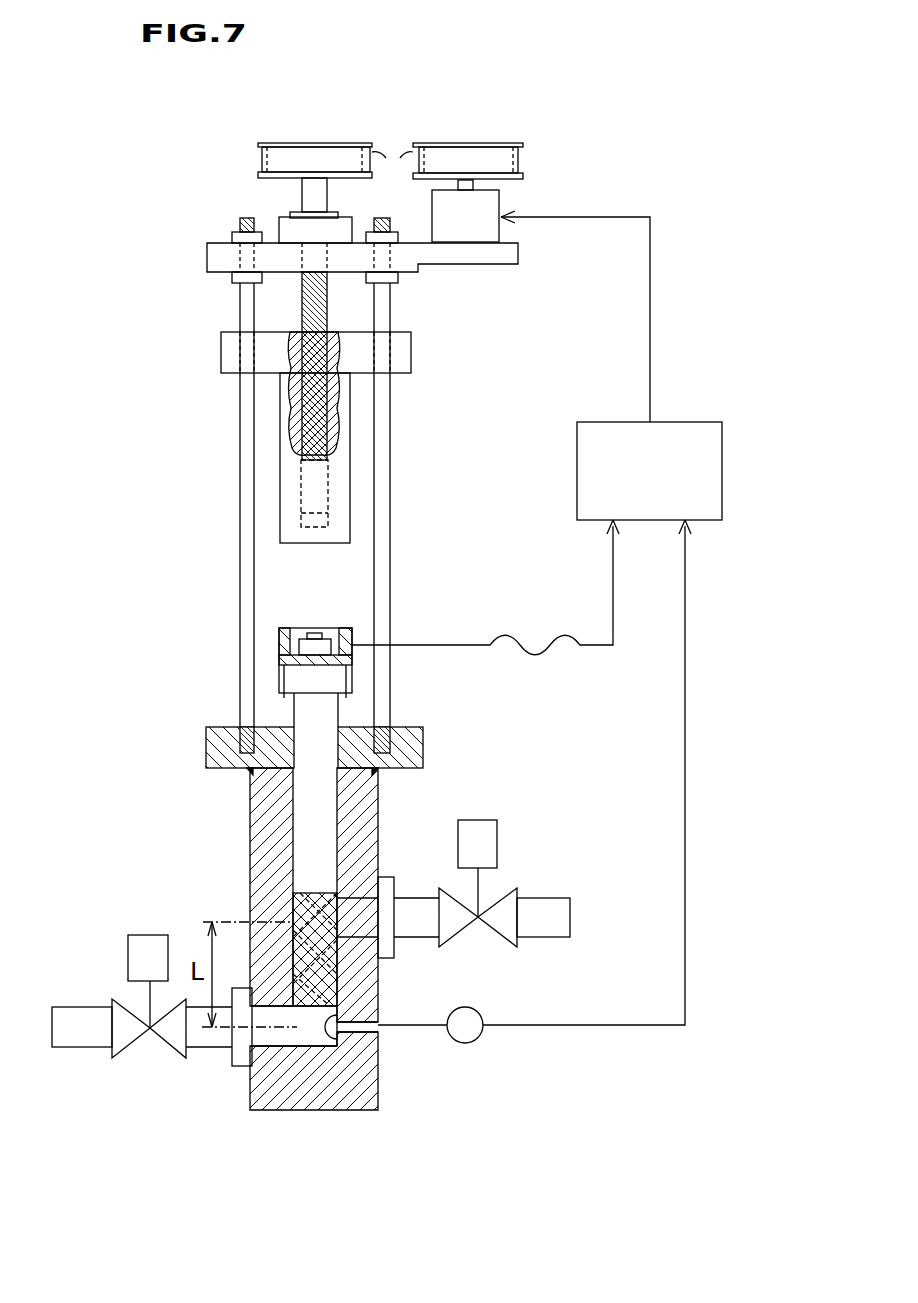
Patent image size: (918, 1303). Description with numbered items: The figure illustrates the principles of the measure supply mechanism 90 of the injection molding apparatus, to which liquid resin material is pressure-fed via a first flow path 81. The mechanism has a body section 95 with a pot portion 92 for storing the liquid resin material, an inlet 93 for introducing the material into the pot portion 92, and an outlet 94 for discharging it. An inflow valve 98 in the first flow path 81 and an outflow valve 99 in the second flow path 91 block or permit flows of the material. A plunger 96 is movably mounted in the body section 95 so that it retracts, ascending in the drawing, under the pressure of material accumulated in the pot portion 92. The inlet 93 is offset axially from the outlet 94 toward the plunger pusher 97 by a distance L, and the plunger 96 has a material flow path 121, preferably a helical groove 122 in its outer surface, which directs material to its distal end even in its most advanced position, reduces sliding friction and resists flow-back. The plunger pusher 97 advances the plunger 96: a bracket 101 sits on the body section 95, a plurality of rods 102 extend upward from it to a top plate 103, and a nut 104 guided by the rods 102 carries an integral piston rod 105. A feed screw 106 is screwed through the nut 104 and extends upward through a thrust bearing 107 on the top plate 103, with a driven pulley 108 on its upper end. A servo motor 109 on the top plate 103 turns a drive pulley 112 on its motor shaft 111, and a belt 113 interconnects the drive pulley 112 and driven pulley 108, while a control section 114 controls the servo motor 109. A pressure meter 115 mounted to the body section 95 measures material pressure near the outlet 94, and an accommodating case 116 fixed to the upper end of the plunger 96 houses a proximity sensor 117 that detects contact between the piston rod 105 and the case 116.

The first flow path 81 is at (538, 905).
The measure supply mechanism 90 is at (695, 288).
The second flow path 91 is at (72, 1045).
The pot portion 92 is at (338, 1037).
The inlet 93 is at (362, 905).
The outlet 94 is at (280, 1037).
The body section 95 is at (367, 1073).
The plunger 96 is at (303, 868).
The plunger pusher 97 is at (207, 460).
The inflow valve 98 is at (499, 940).
The outflow valve 99 is at (170, 1045).
The bracket 101 is at (210, 757).
The rods 102 is at (245, 570).
The top plate 103 is at (207, 258).
The nut 104 is at (405, 358).
The piston rod 105 is at (345, 478).
The feed screw 106 is at (302, 313).
The thrust bearing 107 is at (283, 222).
The driven pulley 108 is at (385, 157).
The servo motor 109 is at (500, 202).
The motor shaft 111 is at (478, 188).
The drive pulley 112 is at (408, 157).
The belt 113 is at (396, 157).
The control section 114 is at (613, 422).
The pressure meter 115 is at (467, 1043).
The accommodating case 116 is at (280, 640).
The proximity sensor 117 is at (315, 633).
The material flow path 121 is at (393, 949).
The helical groove 122 is at (340, 960).